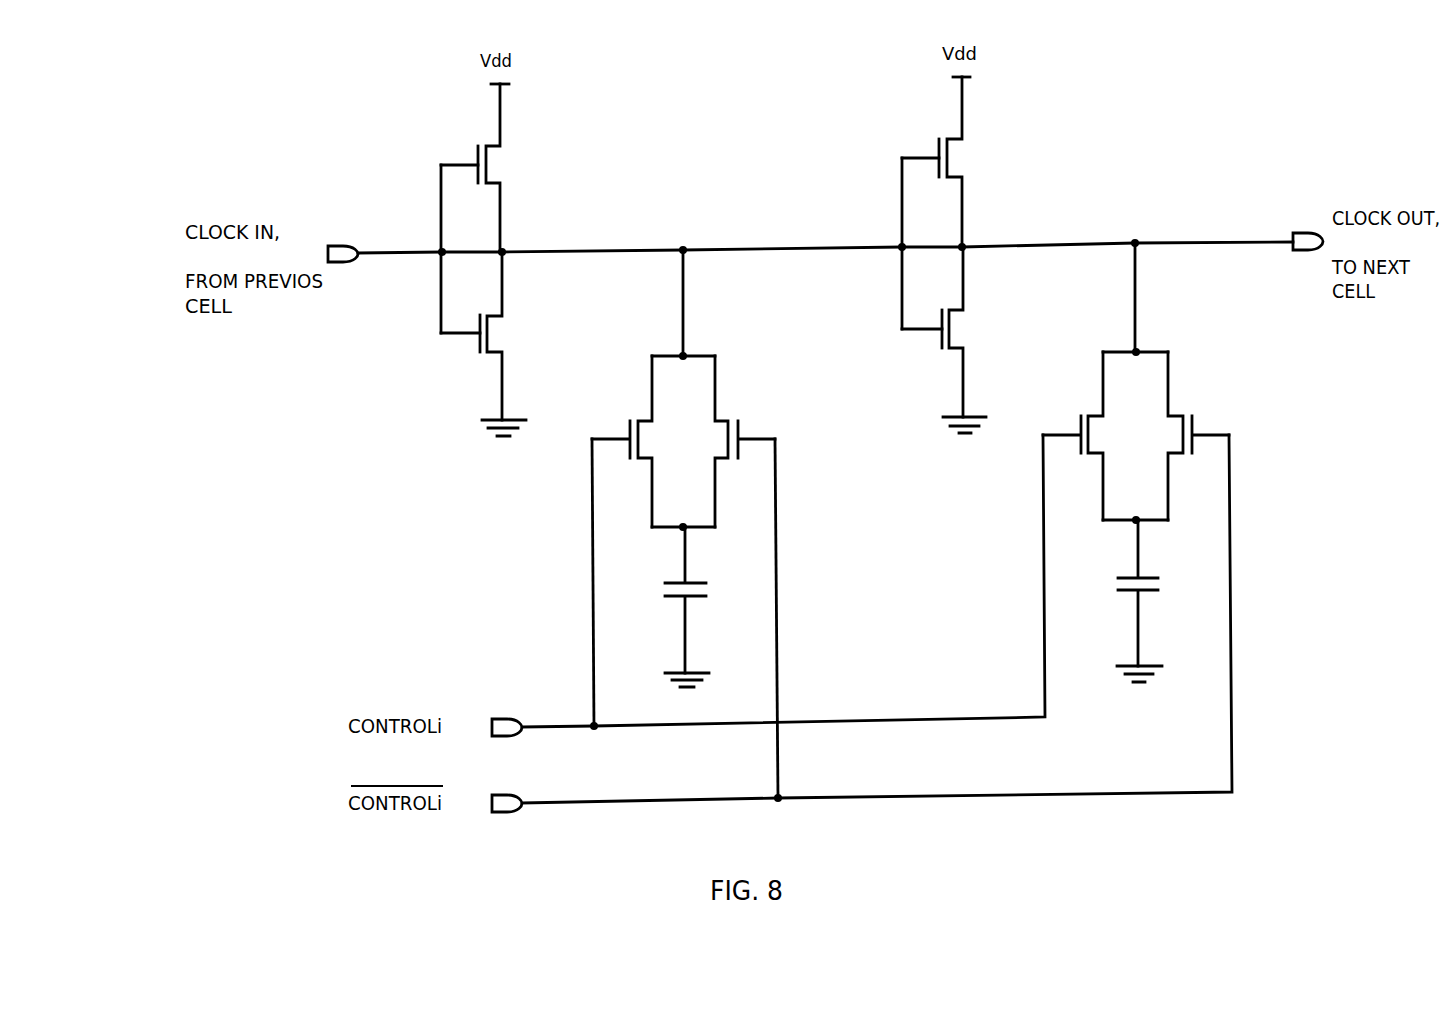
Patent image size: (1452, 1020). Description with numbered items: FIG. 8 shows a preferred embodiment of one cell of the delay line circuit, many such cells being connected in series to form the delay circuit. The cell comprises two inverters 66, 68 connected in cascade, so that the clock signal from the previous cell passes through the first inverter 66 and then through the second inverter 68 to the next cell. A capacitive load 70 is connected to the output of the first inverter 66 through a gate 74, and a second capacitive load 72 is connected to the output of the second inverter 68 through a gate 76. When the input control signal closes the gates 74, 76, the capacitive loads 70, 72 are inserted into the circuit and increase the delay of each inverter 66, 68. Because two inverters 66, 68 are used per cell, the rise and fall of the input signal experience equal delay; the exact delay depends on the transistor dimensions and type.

The inverter 66 is at (566, 198).
The inverter 68 is at (1007, 197).
The capacitive load 70 is at (705, 620).
The capacitive load 72 is at (1158, 615).
The gate 74 is at (763, 381).
The gate 76 is at (1224, 373).